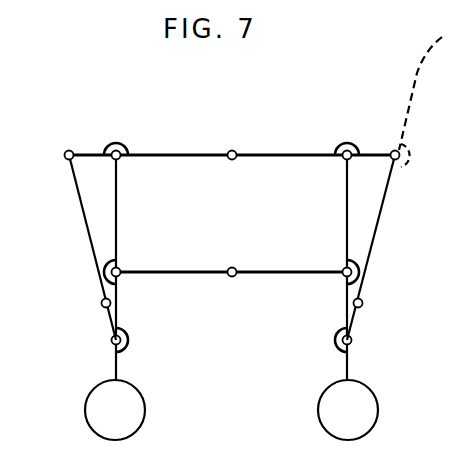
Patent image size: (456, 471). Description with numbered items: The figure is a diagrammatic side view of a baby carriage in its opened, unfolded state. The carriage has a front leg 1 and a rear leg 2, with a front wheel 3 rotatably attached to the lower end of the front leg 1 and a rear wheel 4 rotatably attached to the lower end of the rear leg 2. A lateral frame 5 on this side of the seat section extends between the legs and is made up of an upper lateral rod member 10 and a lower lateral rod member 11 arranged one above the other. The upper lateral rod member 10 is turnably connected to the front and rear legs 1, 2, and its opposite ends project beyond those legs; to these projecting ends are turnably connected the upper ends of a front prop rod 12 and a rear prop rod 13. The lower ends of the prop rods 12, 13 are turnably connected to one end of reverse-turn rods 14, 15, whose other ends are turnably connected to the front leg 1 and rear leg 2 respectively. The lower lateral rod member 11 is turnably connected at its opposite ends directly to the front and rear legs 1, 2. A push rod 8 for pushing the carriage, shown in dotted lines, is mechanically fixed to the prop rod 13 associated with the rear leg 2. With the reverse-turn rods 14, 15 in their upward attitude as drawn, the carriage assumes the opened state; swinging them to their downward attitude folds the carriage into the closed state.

The front leg 1 is at (118, 316).
The rear leg 2 is at (343, 302).
The front wheel 3 is at (145, 416).
The rear wheel 4 is at (318, 408).
The lateral frame 5 is at (273, 153).
The push rod 8 is at (413, 83).
The upper lateral rod member 10 is at (205, 155).
The lower lateral rod member 11 is at (203, 274).
The prop rod 12 is at (82, 218).
The prop rod 13 is at (378, 229).
The reverse-turn rod 14 is at (108, 322).
The reverse-turn rod 15 is at (355, 327).